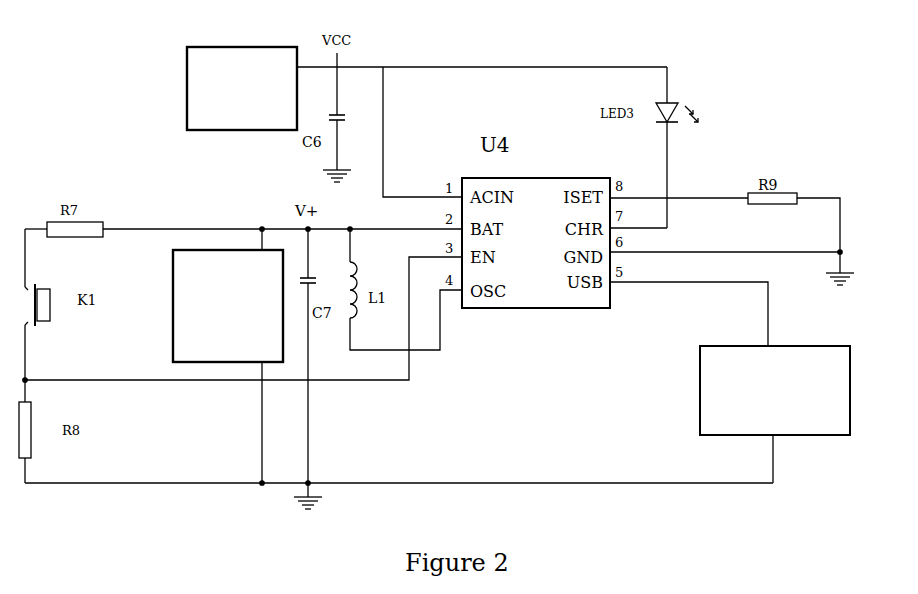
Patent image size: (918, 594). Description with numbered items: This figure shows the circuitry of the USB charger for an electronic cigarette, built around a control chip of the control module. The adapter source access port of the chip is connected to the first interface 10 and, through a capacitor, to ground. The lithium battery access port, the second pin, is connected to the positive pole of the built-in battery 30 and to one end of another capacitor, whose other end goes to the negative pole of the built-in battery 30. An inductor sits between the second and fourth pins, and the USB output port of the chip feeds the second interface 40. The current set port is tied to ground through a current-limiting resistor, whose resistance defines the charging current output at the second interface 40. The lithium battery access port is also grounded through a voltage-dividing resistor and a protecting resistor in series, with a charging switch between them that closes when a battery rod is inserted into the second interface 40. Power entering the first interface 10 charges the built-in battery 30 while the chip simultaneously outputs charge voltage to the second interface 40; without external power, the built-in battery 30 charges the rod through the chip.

The first interface 10 is at (242, 88).
The built-in battery 30 is at (228, 356).
The second interface 40 is at (730, 382).